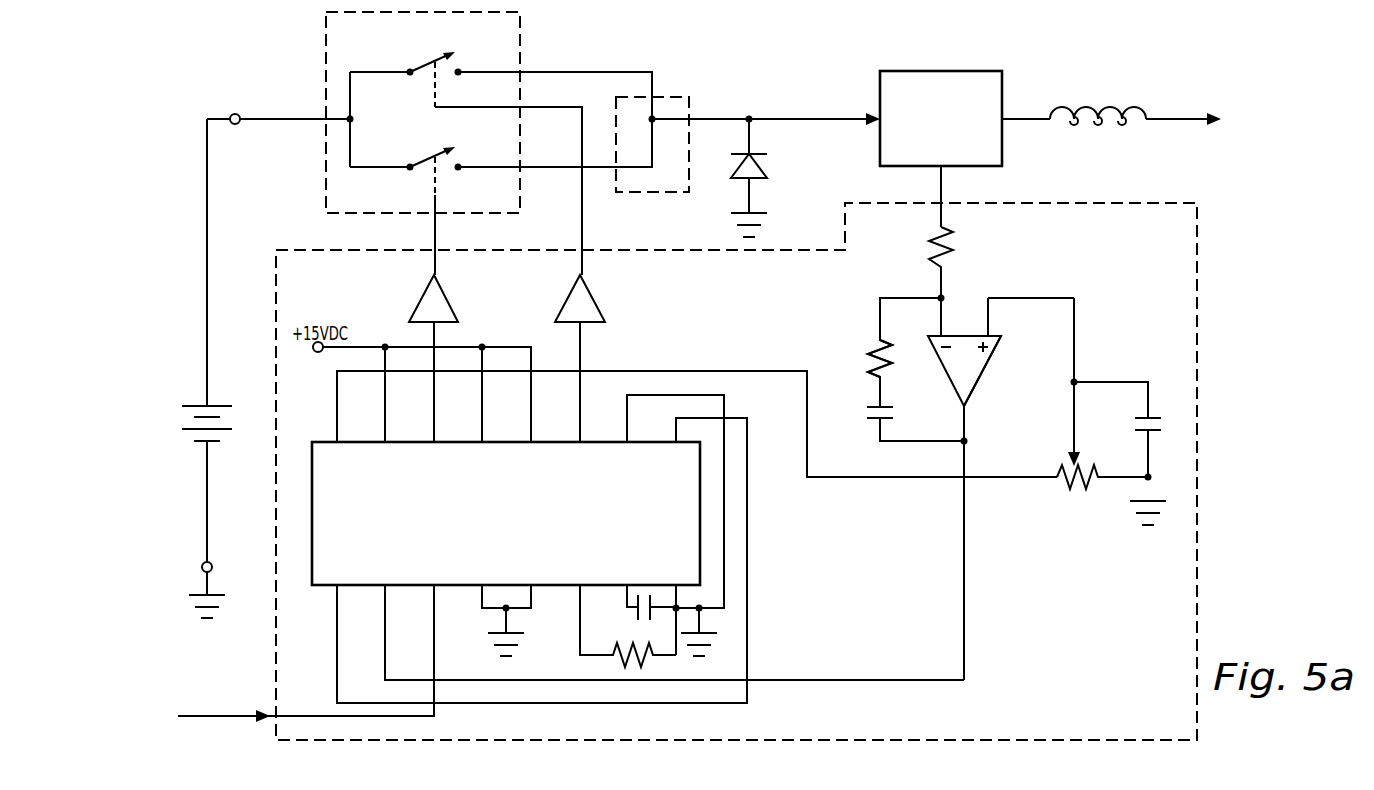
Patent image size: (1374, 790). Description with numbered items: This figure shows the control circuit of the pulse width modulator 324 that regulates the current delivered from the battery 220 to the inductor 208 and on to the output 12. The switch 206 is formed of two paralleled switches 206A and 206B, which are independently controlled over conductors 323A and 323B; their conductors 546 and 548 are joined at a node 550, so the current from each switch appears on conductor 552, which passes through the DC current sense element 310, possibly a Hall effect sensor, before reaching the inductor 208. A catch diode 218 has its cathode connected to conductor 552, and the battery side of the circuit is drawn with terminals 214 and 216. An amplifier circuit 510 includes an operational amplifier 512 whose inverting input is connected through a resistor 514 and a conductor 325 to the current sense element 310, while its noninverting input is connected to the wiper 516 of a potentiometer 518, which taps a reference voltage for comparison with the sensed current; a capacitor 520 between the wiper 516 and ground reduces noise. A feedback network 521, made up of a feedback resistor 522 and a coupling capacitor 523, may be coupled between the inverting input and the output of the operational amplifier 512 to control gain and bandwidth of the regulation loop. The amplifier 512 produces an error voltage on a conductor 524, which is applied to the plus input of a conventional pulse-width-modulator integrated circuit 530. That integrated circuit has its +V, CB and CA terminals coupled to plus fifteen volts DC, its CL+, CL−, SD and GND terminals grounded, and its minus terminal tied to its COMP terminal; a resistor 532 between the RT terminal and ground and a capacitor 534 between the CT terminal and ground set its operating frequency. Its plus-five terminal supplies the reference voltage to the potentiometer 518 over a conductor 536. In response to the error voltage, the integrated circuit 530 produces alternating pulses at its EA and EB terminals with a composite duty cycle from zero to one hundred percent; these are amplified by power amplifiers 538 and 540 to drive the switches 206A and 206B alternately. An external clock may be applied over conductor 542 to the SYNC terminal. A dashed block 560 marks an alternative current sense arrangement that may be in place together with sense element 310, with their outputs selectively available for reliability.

The output line to load 12 is at (1183, 117).
The inductor 208 is at (1110, 103).
The input terminal 214 is at (235, 114).
The ground terminal 216 is at (200, 567).
The catch diode 218 is at (742, 164).
The battery 220 is at (182, 420).
The switch 206 is at (423, 112).
The paralleled switch 206A is at (422, 66).
The paralleled switch 206B is at (425, 162).
The DC current sense element 310 is at (903, 70).
The conductor 323A is at (435, 235).
The conductor 323B is at (582, 232).
The pulse width modulator 324 is at (736, 474).
The conductor 325 is at (941, 183).
The amplifier circuit 510 is at (936, 399).
The operational amplifier 512 is at (985, 362).
The resistor 514 is at (933, 247).
The wiper 516 is at (1074, 433).
The potentiometer 518 is at (1085, 527).
The capacitor 520 is at (1157, 425).
The feedback network 521 is at (855, 380).
The feedback resistor 522 is at (873, 340).
The coupling capacitor 523 is at (893, 415).
The conductor 524 is at (967, 658).
The pulse-width-modulator integrated circuit 530 is at (525, 523).
The resistor 532 is at (613, 660).
The capacitor 534 is at (640, 620).
The conductor 536 is at (918, 477).
The power amplifier 538 is at (592, 297).
The power amplifier 540 is at (446, 297).
The conductor 542 is at (232, 713).
The conductor 546 is at (492, 66).
The conductor 548 is at (492, 163).
The node 550 is at (652, 115).
The conductor 552 is at (790, 117).
The current sense arrangement 560 is at (690, 100).